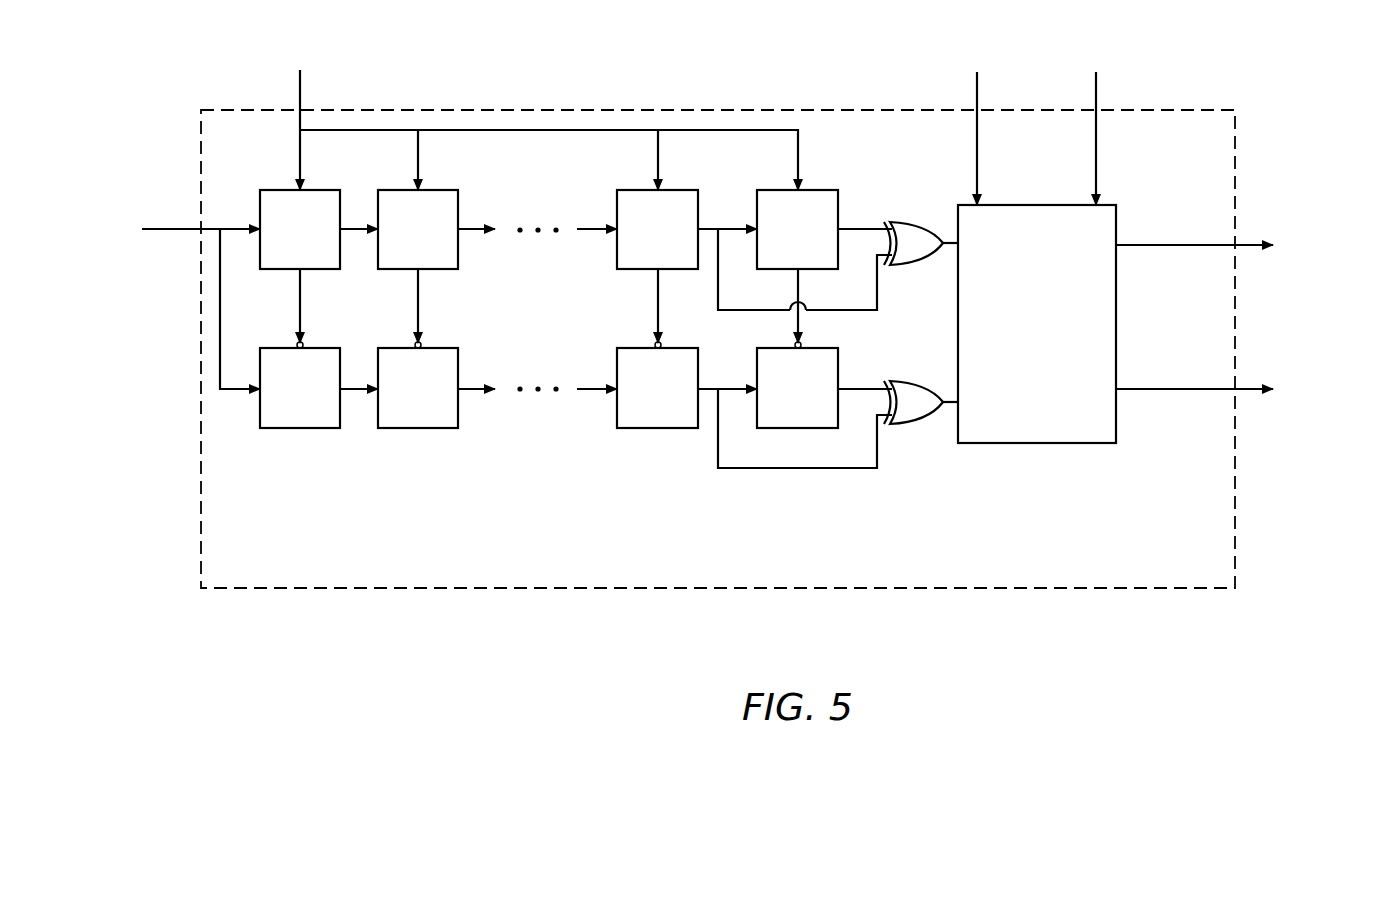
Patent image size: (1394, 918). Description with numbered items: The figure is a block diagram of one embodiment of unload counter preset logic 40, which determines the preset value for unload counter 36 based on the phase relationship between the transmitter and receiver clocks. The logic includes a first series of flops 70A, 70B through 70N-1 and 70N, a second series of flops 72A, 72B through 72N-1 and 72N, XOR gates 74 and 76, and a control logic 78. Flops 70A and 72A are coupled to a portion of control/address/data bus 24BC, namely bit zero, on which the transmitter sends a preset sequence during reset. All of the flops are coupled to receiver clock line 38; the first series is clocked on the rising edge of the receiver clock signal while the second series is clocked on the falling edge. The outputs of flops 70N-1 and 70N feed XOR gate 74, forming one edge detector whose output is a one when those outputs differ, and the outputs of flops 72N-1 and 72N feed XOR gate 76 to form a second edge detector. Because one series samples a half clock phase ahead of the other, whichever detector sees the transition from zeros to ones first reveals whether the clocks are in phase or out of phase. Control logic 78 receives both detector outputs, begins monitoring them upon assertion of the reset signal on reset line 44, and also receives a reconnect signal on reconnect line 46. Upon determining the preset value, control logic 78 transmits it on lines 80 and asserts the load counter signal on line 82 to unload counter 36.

The unload counter preset logic 40 is at (1101, 571).
The receiver clock line 38 is at (300, 132).
The control/address/data bus 24BC is at (170, 229).
The flop 70A is at (281, 241).
The flop 70B is at (399, 241).
The flop 70N-1 is at (627, 241).
The flop 70N is at (775, 241).
The flop 72A is at (281, 400).
The flop 72B is at (399, 400).
The flop 72N-1 is at (627, 400).
The flop 72N is at (775, 400).
The XOR gate 74 is at (917, 222).
The XOR gate 76 is at (917, 408).
The control logic 78 is at (1023, 352).
The reset line 44 is at (977, 163).
The reconnect line 46 is at (1096, 152).
The lines 80 is at (1207, 247).
The line 82 is at (1207, 392).
The unload counter 36 is at (1333, 310).